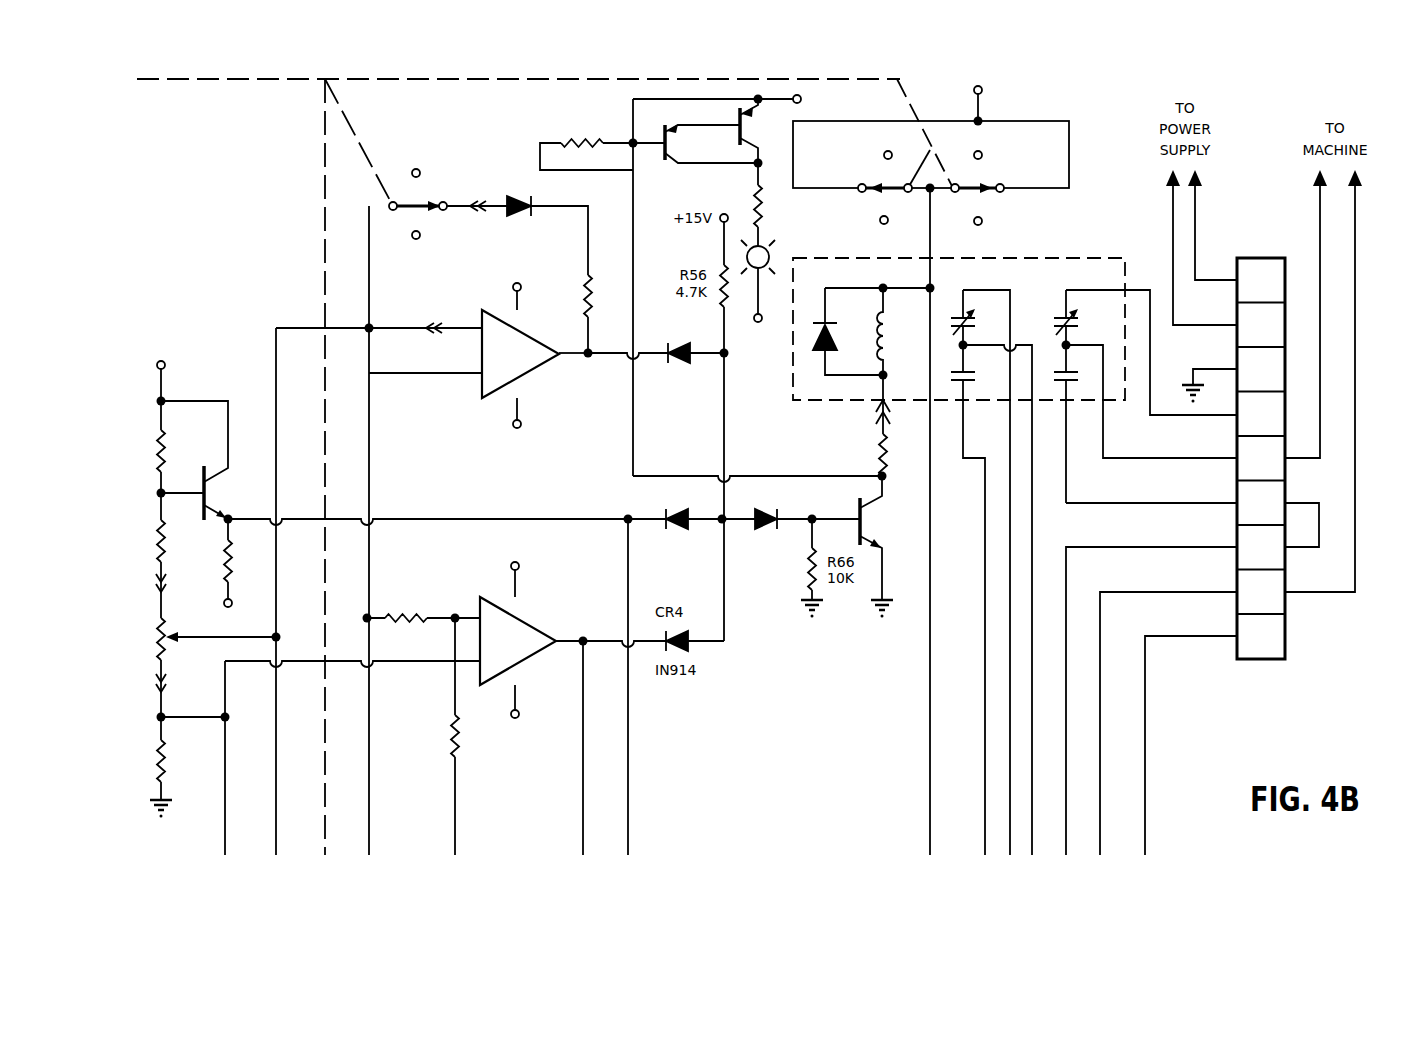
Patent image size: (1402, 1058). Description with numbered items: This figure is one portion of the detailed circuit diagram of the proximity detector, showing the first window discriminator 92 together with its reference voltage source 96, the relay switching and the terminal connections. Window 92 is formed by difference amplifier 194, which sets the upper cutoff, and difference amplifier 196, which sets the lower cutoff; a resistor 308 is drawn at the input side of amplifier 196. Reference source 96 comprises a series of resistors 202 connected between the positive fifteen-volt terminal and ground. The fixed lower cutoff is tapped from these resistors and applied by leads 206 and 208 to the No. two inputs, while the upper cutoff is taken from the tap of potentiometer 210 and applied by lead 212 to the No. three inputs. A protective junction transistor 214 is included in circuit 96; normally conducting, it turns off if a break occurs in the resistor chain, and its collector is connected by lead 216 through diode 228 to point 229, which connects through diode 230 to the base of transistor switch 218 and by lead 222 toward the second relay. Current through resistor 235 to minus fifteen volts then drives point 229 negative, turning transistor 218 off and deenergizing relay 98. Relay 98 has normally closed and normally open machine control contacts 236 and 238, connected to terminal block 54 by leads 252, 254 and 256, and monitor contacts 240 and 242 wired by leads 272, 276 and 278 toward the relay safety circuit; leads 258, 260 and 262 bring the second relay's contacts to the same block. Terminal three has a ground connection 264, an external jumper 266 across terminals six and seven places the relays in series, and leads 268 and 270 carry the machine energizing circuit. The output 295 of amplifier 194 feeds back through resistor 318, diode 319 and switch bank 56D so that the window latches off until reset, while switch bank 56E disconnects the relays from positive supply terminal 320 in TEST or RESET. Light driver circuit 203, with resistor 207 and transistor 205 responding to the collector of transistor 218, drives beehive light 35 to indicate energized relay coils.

The window discriminator 92 is at (301, 467).
The reference voltage source 96 is at (162, 399).
The series resistors 202 is at (120, 647).
The protective junction transistor 214 is at (218, 460).
The resistor 235 is at (229, 573).
The potentiometer 210 is at (223, 617).
The lead 206 is at (195, 691).
The lead 208 is at (204, 786).
The lead 212 is at (279, 591).
The switch bank 56D is at (457, 197).
The diode 319 is at (536, 227).
The resistor 318 is at (590, 303).
The difference amplifier 194 is at (529, 357).
The light driver circuit 203 is at (693, 283).
The resistor 207 is at (586, 142).
The transistor 205 is at (698, 146).
The beehive light 35 is at (779, 253).
The switch bank 56E is at (931, 184).
The positive power supply terminal 320 is at (996, 93).
The relay 98 is at (959, 315).
The normally closed monitor contacts 240 is at (959, 306).
The normally closed machine control contacts 236 is at (1051, 313).
The normally open monitor contacts 242 is at (978, 600).
The normally open machine control contacts 238 is at (1100, 424).
The terminal block 54 is at (1261, 433).
The lead 268 is at (1303, 314).
The ground connection 264 is at (1209, 369).
The lead 252 is at (1151, 368).
The lead 254 is at (1151, 416).
The lead 256 is at (1151, 518).
The lead 258 is at (1151, 701).
The lead 260 is at (1168, 723).
The lead 262 is at (1191, 745).
The external jumper 266 is at (1309, 543).
The lead 270 is at (1323, 400).
The output 295 is at (692, 349).
The lead 216 is at (428, 505).
The diode 228 is at (671, 522).
The point 229 is at (702, 497).
The diode 230 is at (777, 523).
The transistor switch 218 is at (871, 496).
The difference amplifier 196 is at (473, 644).
The resistor R58 308 is at (459, 736).
The lead 222 is at (654, 687).
The lead 278 is at (957, 521).
The lead 272 is at (975, 572).
The lead 276 is at (987, 600).